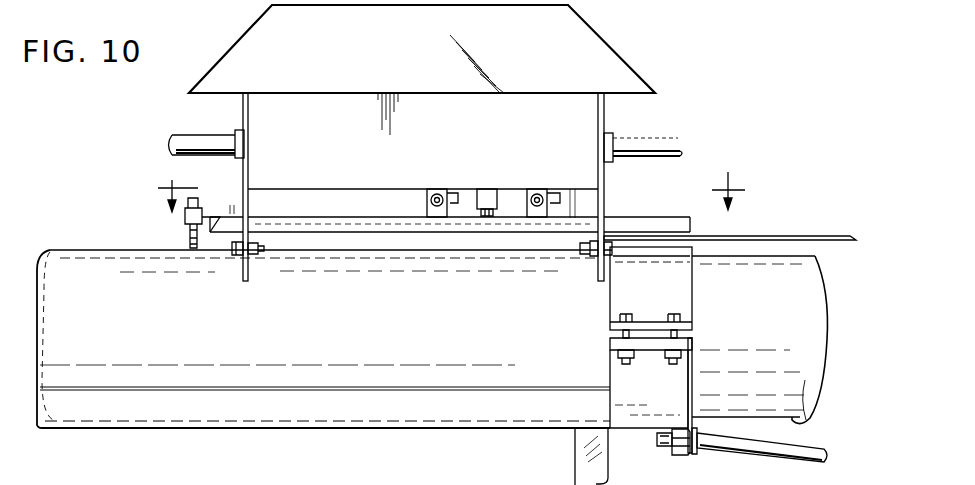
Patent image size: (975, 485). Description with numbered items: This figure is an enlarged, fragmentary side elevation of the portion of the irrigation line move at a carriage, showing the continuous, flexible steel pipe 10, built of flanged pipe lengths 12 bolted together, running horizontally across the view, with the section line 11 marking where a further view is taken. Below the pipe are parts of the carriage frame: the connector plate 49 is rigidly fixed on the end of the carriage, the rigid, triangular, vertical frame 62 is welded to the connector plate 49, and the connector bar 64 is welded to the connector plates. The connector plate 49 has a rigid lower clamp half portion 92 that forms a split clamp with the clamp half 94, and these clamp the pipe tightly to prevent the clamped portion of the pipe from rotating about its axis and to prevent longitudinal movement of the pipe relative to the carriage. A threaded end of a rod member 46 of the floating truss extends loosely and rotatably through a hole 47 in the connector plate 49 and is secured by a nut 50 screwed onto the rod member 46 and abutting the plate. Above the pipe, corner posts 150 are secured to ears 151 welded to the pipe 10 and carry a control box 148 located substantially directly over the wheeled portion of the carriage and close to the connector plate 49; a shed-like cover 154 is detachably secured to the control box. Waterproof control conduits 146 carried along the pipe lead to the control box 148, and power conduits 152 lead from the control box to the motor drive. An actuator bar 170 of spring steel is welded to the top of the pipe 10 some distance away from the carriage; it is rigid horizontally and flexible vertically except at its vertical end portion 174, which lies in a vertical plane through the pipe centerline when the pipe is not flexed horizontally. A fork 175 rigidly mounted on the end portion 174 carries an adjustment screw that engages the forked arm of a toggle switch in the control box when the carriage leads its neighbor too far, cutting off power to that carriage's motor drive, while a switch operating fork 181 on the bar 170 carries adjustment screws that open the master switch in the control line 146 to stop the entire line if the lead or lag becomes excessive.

The steel pipe 10 is at (90, 248).
The section line 11- 11 is at (458, 186).
The flanged pipe length 12 is at (760, 254).
The rod member 46 is at (795, 465).
The hole 47 is at (686, 420).
The connector plate 49 is at (693, 380).
The nut 50 is at (679, 454).
The vertical frame 62 is at (602, 448).
The connector bar 64 is at (571, 412).
The lower clamp half portion 92 is at (608, 378).
The clamp half 94 is at (692, 294).
The control conduit 146 is at (174, 142).
The control box 148 is at (256, 116).
The corner post 150 is at (243, 179).
The ear 151 is at (252, 282).
The power conduit 152 is at (480, 200).
The shed-like cover 154 is at (635, 66).
The actuator bar 170 is at (828, 228).
The vertical end portion 174 is at (315, 230).
The fork 175 is at (562, 196).
The switch operating fork 181 is at (428, 200).